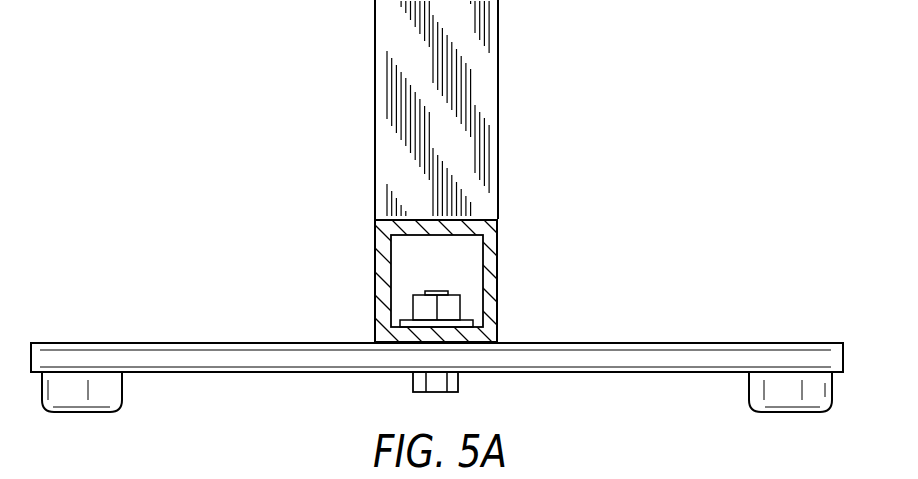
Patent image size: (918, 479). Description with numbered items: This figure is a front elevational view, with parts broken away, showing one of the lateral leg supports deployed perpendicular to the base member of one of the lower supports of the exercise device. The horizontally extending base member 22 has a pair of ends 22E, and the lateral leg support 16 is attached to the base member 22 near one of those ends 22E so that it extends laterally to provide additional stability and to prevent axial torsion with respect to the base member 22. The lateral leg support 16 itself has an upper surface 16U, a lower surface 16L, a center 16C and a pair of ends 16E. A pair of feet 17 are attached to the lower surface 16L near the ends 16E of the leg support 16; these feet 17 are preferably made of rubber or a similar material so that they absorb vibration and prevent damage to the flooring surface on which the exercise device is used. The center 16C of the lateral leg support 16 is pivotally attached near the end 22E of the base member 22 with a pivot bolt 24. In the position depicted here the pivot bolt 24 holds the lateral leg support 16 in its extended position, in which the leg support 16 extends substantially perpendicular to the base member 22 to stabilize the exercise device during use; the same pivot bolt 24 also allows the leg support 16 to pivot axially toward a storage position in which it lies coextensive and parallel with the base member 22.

The lateral leg support 16 is at (243, 342).
The upper surface 16U is at (327, 342).
The lower surface 16L is at (273, 373).
The ends 16E is at (25, 350).
The center 16C is at (487, 373).
The feet 17 is at (103, 413).
The base member 22 is at (498, 262).
The ends 22E is at (492, 305).
The pivot bolt 24 is at (413, 383).